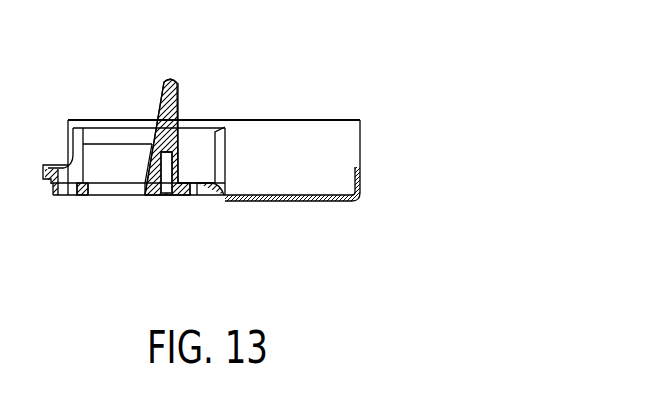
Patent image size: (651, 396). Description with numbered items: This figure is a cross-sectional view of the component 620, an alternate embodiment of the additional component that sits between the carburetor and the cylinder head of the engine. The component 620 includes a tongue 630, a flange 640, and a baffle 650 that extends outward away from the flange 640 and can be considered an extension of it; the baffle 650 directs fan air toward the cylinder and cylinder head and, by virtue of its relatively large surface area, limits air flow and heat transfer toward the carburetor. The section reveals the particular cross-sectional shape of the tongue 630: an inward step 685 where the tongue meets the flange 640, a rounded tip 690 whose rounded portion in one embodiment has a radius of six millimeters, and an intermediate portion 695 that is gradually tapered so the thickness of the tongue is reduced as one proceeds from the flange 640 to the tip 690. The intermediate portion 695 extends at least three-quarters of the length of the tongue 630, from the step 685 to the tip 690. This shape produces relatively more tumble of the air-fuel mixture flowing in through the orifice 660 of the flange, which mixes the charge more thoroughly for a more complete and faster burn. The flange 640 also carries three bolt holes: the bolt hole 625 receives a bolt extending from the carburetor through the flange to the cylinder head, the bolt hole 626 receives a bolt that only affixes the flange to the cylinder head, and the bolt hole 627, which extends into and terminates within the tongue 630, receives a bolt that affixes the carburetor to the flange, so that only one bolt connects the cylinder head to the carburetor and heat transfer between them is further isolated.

The component 620 is at (290, 96).
The bolt hole 625 is at (63, 198).
The bolt hole 626 is at (199, 197).
The bolt hole 627 is at (164, 197).
The tongue 630 is at (179, 83).
The flange 640 is at (79, 198).
The baffle 650 is at (358, 197).
The orifice 660 is at (124, 210).
The inward step 685 is at (148, 178).
The tip 690 is at (170, 77).
The intermediate portion 695 is at (154, 103).